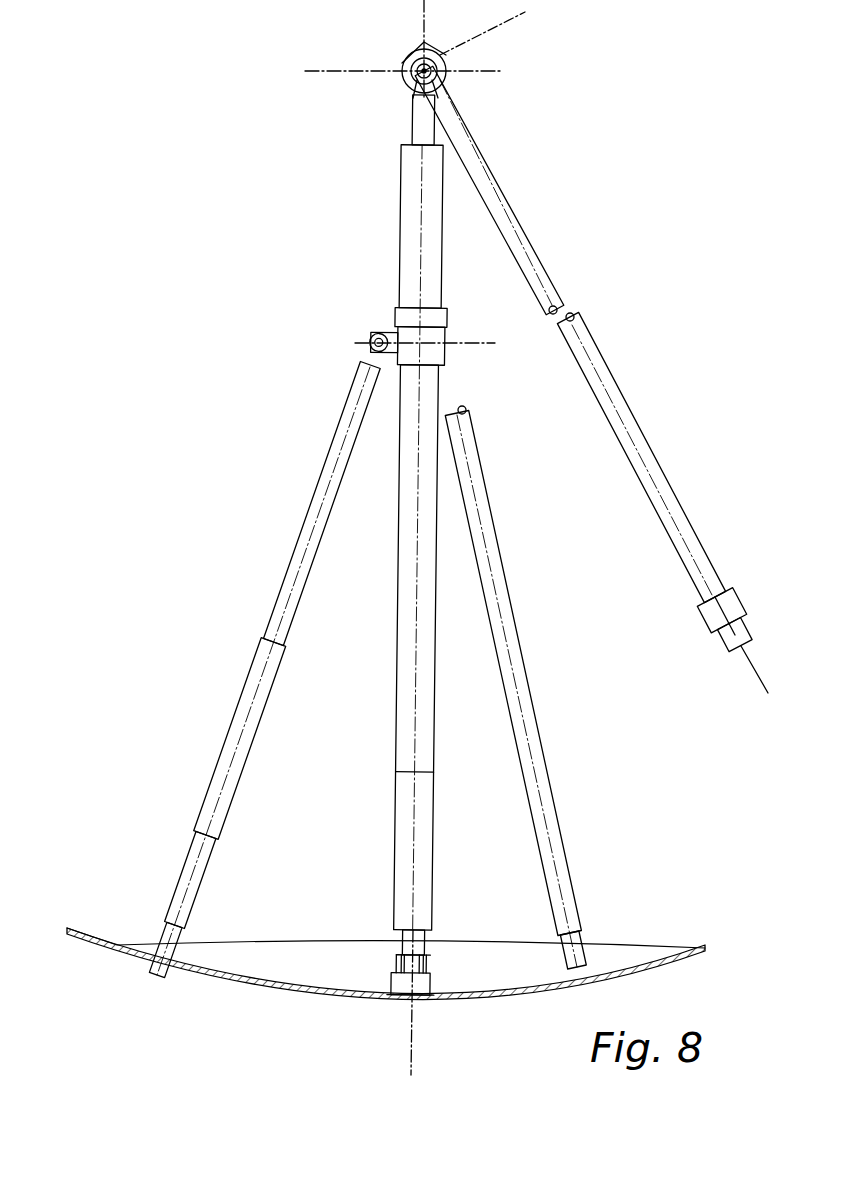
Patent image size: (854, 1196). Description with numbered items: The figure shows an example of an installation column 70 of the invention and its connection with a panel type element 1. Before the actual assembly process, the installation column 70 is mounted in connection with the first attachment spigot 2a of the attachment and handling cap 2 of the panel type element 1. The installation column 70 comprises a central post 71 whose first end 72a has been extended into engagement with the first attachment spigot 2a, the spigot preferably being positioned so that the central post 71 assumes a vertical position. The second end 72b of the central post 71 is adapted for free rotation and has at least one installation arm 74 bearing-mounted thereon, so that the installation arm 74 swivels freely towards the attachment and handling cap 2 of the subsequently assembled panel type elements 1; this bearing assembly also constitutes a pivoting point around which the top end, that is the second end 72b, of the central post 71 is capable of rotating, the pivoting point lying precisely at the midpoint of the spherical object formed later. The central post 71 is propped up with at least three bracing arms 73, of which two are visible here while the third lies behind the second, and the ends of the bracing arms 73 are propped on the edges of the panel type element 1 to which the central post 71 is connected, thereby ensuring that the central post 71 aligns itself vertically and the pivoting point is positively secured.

The installation column 70 is at (577, 183).
The second end of the central post 72b is at (432, 67).
The central post 71 is at (426, 725).
The first end of the central post 72a is at (433, 935).
The bracing arm 73 is at (295, 566).
The installation arm 74 is at (615, 385).
The panel type element 1 is at (286, 992).
The first attachment spigot 2a is at (396, 973).
The attachment and handling cap 2 is at (425, 985).